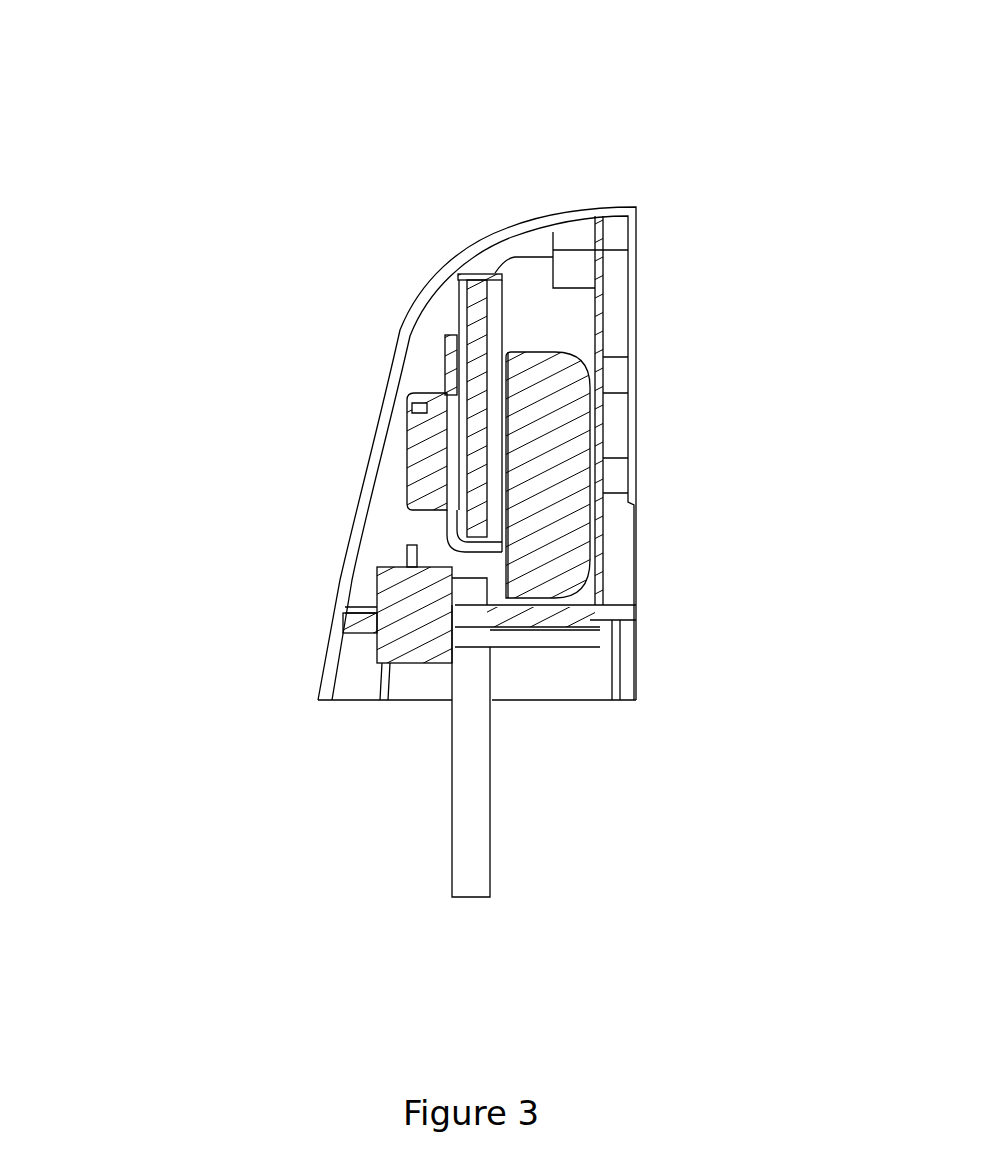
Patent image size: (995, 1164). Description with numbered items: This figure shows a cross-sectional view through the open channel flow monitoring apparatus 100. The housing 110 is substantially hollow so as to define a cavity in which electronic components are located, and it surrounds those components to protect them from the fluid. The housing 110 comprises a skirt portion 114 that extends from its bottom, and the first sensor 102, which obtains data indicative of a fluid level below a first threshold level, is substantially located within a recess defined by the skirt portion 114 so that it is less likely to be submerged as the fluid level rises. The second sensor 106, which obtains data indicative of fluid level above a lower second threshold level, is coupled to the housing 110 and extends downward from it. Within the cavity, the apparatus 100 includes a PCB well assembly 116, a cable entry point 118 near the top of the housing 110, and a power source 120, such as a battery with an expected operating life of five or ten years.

The open channel flow monitoring apparatus 100 is at (154, 138).
The first sensor 102 is at (387, 563).
The second sensor 106 is at (493, 819).
The housing 110 is at (383, 417).
The skirt portion 114 is at (319, 669).
The PCB well assembly 116 is at (462, 340).
The cable entry point 118 is at (553, 250).
The power source 120 is at (543, 470).